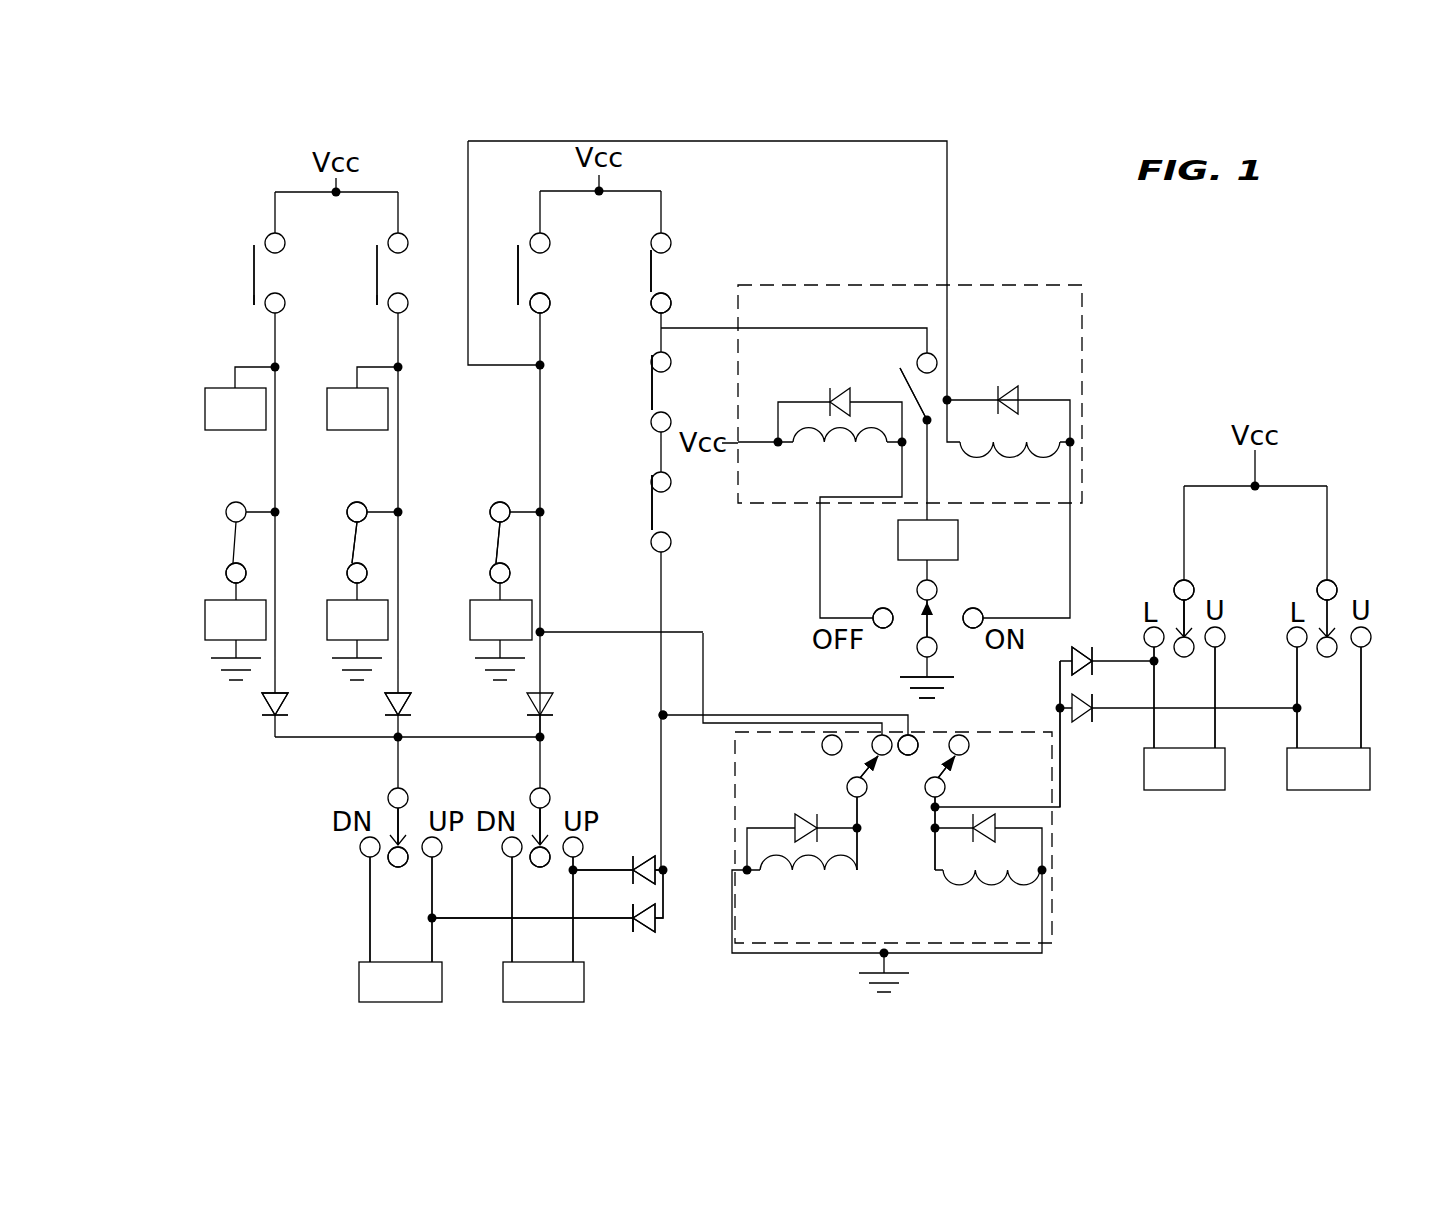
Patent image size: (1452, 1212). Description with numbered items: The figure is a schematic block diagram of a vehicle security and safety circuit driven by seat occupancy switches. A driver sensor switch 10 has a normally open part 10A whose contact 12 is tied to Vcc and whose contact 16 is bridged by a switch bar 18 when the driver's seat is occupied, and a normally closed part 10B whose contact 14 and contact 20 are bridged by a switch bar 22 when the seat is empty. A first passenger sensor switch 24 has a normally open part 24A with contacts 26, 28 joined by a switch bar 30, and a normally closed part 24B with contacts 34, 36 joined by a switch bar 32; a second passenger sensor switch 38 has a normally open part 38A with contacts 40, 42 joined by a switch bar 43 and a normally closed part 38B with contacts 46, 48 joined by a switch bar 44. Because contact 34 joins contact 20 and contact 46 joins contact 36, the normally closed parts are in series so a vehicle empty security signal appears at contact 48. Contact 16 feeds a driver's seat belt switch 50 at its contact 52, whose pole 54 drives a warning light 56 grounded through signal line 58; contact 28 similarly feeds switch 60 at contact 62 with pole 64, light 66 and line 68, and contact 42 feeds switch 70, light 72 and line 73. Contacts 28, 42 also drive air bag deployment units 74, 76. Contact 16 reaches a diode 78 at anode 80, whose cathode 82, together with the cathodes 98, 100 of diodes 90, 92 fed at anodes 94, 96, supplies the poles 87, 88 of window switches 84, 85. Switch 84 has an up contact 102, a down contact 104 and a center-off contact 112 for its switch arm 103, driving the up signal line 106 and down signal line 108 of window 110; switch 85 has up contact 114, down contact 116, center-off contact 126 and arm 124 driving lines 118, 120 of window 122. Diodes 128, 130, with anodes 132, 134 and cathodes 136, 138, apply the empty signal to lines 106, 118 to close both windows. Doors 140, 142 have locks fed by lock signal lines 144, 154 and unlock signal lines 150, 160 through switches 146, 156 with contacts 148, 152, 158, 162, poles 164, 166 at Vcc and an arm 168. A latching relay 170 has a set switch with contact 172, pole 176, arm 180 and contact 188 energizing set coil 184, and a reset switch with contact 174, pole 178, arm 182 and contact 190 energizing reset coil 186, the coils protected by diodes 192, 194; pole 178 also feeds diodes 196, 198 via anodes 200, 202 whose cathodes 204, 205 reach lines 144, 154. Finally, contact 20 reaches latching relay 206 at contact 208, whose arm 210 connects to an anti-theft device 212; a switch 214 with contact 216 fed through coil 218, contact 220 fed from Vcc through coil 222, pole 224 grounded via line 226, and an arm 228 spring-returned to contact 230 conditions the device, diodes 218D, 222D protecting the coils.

The driver sensor switch 10 is at (563, 238).
The normally open part 10A is at (518, 248).
The normally closed part 10B is at (651, 258).
The contact 12 is at (547, 251).
The contact 14 is at (668, 251).
The contact 16 is at (549, 298).
The switch bar 18 is at (518, 300).
The contact 20 is at (670, 298).
The switch bar 22 is at (651, 288).
The passenger sensor switch 24 is at (364, 251).
The normally open part 24A is at (369, 275).
The normally closed part 24B is at (647, 392).
The contact 26 is at (405, 251).
The contact 28 is at (407, 298).
The switch bar 30 is at (377, 294).
The switch bar 32 is at (652, 412).
The contact 34 is at (668, 370).
The contact 36 is at (670, 415).
The passenger sensor switch 38 is at (234, 251).
The normally open part 38A is at (247, 275).
The normally closed part 38B is at (647, 510).
The contact 40 is at (282, 251).
The contact 42 is at (284, 298).
The switch bar 43 is at (254, 294).
The switch bar 44 is at (652, 532).
The contact 46 is at (668, 490).
The contact 48 is at (670, 534).
The driver's seat belt switch 50 is at (474, 505).
The contact 52 is at (497, 503).
The pole 54 is at (509, 572).
The driver's seat belt warning light 56 is at (470, 600).
The signal line 58 is at (500, 648).
The first passenger's seat belt switch 60 is at (333, 505).
The contact 62 is at (354, 503).
The pole 64 is at (366, 572).
The first passenger's seat belt light 66 is at (327, 600).
The signal line 68 is at (357, 648).
The second passenger's seat belt switch 70 is at (211, 505).
The second passenger's seat belt light 72 is at (207, 600).
The signal line 73 is at (215, 651).
The air bag deployment unit 74 is at (327, 392).
The air bag deployment unit 76 is at (207, 392).
The diode 78 is at (590, 722).
The anode 80 is at (548, 698).
The cathode 82 is at (550, 712).
The single pole triple throw switch 84 is at (551, 781).
The single pole triple throw switch 85 is at (409, 781).
The pole 87 is at (532, 793).
The pole 88 is at (391, 793).
The diode 90 is at (440, 716).
The diode 92 is at (300, 716).
The anode 94 is at (406, 700).
The anode 96 is at (284, 700).
The cathode 98 is at (410, 712).
The cathode 100 is at (288, 712).
The up contact 102 is at (566, 836).
The switch arm 103 is at (540, 822).
The down contact 104 is at (502, 847).
The up signal line 106 is at (573, 938).
The down signal line 108 is at (512, 938).
The electrically operated window 110 is at (503, 998).
The center-off contact 112 is at (540, 867).
The up contact 114 is at (440, 857).
The down contact 116 is at (360, 847).
The up signal line 118 is at (432, 938).
The down signal line 120 is at (359, 940).
The electrically operated window 122 is at (359, 978).
The switch arm 124 is at (398, 822).
The center-off contact 126 is at (398, 867).
The diode 128 is at (641, 858).
The diode 130 is at (667, 947).
The anode 132 is at (665, 874).
The anode 134 is at (665, 921).
The cathode 136 is at (634, 870).
The cathode 138 is at (632, 922).
The door 140 is at (1226, 788).
The door 142 is at (1371, 772).
The lock signal line 144 is at (1155, 718).
The single pole triple throw switch 146 is at (1172, 572).
The contact 148 is at (1167, 625).
The unlock signal line 150 is at (1216, 718).
The contact 152 is at (1224, 640).
The lock signal line 154 is at (1298, 718).
The single pole triple throw switch 156 is at (1316, 574).
The contact 158 is at (1291, 647).
The unlock signal line 160 is at (1363, 718).
The contact 162 is at (1370, 642).
The pole 164 is at (1193, 597).
The pole 166 is at (1336, 592).
The switch arm 168 is at (1188, 610).
The double pole double throw latching relay 170 is at (733, 805).
The contact 172 is at (878, 738).
The contact 174 is at (917, 742).
The pole 176 is at (867, 790).
The pole 178 is at (928, 810).
The switch arm 180 is at (871, 762).
The switch arm 182 is at (946, 772).
The set coil 184 is at (788, 872).
The reset coil 186 is at (950, 880).
The contact 188 is at (822, 744).
The contact 190 is at (969, 745).
The diode 192 is at (797, 818).
The diode 194 is at (997, 840).
The diode 196 is at (1078, 644).
The diode 198 is at (1067, 742).
The anode 200 is at (1072, 654).
The anode 202 is at (1062, 712).
The cathode 204 is at (1094, 668).
The cathode 205 is at (1108, 720).
The single pole single throw latching relay 206 is at (1033, 282).
The contact 208 is at (934, 353).
The switch arm 210 is at (900, 375).
The anti-theft device 212 is at (960, 542).
The single pole triple throw switch 214 is at (998, 590).
The contact 216 is at (978, 611).
The coil 218 is at (972, 458).
The diode 218D is at (1007, 388).
The contact 220 is at (876, 611).
The coil 222 is at (820, 448).
The diode 222D is at (845, 390).
The pole 224 is at (935, 653).
The signal line 226 is at (918, 668).
The arm 228 is at (927, 626).
The contact 230 is at (935, 584).